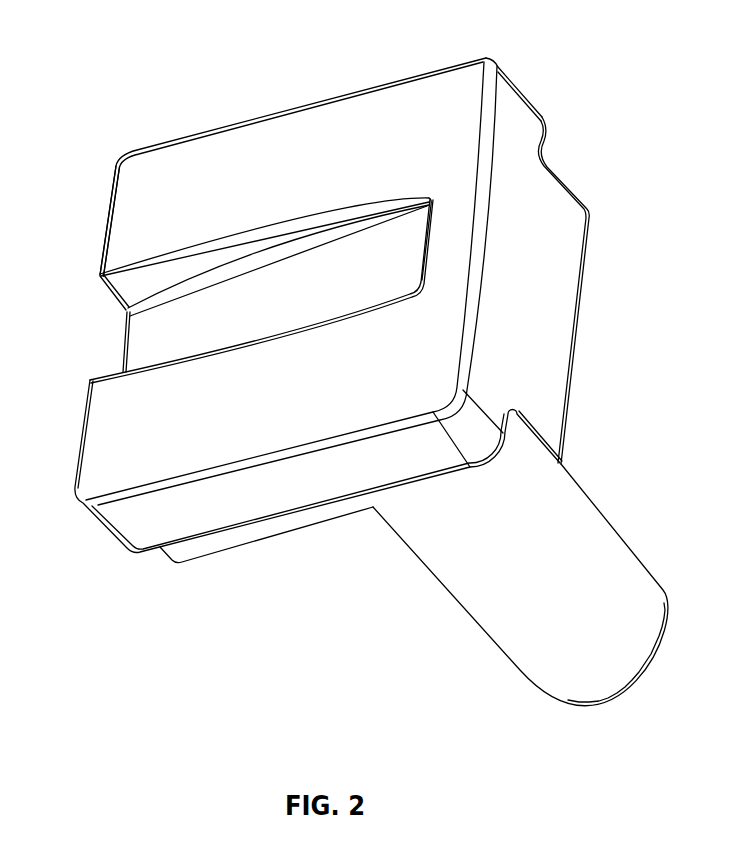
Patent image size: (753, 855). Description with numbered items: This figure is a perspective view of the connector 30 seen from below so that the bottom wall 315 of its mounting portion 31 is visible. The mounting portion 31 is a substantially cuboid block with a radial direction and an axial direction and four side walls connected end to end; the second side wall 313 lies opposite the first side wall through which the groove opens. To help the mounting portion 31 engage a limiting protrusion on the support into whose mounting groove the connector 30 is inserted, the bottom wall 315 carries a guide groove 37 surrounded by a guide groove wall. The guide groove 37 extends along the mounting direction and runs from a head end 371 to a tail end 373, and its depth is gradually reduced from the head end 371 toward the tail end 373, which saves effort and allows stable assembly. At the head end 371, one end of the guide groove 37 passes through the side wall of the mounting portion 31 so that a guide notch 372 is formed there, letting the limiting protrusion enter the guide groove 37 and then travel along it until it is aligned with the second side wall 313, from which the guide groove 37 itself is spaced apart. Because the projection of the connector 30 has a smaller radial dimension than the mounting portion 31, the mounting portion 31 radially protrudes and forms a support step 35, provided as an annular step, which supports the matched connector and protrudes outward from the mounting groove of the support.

The connector 30 is at (326, 70).
The mounting portion 31 is at (478, 77).
The second side wall 313 is at (498, 352).
The bottom wall 315 is at (146, 186).
The support step 35 is at (597, 518).
The guide groove 37 is at (151, 296).
The head end 371 is at (120, 313).
The guide notch 372 is at (116, 354).
The tail end 373 is at (427, 246).